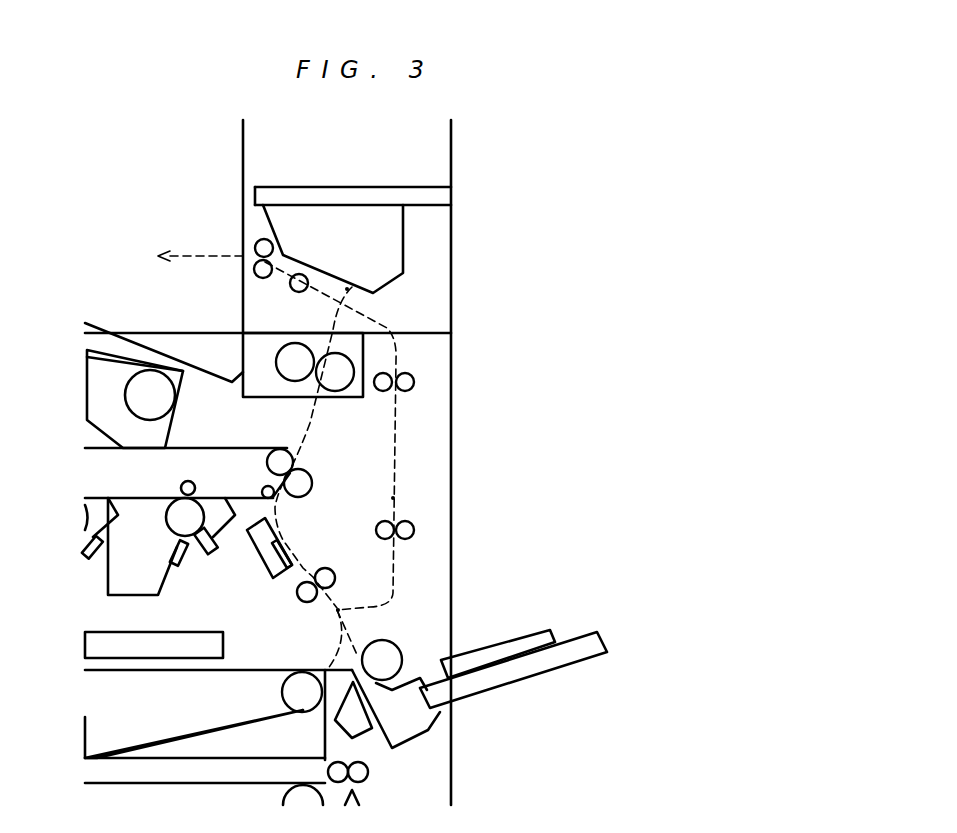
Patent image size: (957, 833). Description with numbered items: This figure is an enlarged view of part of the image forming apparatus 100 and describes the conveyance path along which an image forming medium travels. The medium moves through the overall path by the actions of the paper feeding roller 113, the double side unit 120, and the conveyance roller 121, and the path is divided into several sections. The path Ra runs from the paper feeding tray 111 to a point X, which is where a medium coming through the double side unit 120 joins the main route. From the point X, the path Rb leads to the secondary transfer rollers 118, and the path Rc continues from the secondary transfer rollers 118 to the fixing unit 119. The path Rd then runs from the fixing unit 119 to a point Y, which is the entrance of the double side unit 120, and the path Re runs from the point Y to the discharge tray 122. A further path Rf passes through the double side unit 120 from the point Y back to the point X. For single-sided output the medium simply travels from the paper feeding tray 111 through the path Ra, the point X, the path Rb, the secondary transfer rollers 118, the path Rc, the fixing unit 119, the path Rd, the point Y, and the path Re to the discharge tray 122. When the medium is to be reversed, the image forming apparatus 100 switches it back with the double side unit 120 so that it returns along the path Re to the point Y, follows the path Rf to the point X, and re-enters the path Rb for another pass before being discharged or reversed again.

The image forming apparatus 100 is at (567, 322).
The paper feeding tray 111 is at (320, 733).
The paper feeding roller 113 is at (306, 678).
The secondary transfer rollers 118 is at (283, 460).
The fixing unit 119 is at (274, 372).
The double side unit 120 is at (413, 462).
The conveyance roller 121 is at (188, 364).
The discharge tray 122 is at (325, 578).
The path Ra is at (343, 620).
The path Rb is at (290, 535).
The path Rc is at (303, 430).
The path Rd is at (345, 312).
The path Re is at (308, 280).
The path Rf is at (393, 498).
The point X is at (338, 610).
The point Y is at (347, 289).